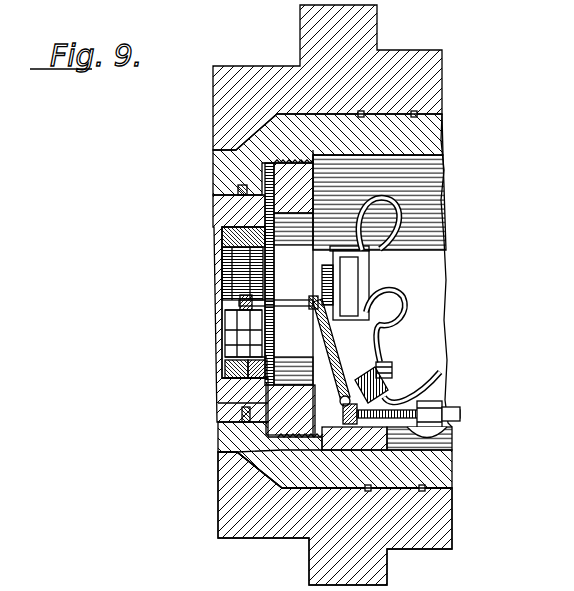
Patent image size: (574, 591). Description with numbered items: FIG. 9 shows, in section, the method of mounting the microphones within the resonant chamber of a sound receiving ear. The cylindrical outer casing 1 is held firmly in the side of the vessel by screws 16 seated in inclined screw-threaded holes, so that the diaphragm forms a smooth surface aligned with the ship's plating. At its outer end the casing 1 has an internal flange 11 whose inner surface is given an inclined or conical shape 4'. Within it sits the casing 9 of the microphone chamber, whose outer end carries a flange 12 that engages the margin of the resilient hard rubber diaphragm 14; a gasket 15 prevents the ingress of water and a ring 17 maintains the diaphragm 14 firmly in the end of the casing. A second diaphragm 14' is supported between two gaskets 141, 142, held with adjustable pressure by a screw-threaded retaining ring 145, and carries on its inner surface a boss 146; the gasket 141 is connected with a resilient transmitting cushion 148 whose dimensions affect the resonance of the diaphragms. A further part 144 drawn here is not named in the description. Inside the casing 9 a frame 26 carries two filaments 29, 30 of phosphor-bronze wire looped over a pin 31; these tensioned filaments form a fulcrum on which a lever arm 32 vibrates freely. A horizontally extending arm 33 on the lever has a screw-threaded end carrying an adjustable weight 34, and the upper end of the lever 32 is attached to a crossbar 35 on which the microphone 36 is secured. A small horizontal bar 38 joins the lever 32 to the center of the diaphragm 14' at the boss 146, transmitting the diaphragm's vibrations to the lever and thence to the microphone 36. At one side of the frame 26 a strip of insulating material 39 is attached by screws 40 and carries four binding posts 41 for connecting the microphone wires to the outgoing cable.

The outer casing 1 is at (220, 134).
The conical inner surface 4' is at (297, 118).
The microphone chamber casing 9 is at (417, 159).
The internal flange 11 is at (213, 152).
The flange 12 is at (228, 421).
The diaphragm 14 is at (224, 292).
The diaphragm 14' is at (217, 302).
The gasket 141 is at (230, 368).
The gasket 142 is at (230, 391).
The cylinder wall 144 is at (270, 352).
The retaining ring 145 is at (247, 358).
The boss 146 is at (245, 313).
The cushion 148 is at (240, 299).
The gasket 15 is at (231, 443).
The screws 16 is at (233, 462).
The ring 17 is at (242, 411).
The frame 26 is at (337, 420).
The filament 29 is at (318, 392).
The filament 30 is at (332, 352).
The pin 31 is at (400, 404).
The lever arm 32 is at (312, 345).
The horizontally extending arm 33 is at (433, 433).
The adjustable weight 34 is at (442, 406).
The crossbar 35 is at (318, 288).
The microphone 36 is at (345, 287).
The horizontal bar 38 is at (309, 300).
The strip of insulating material 39 is at (392, 397).
The screws 40 is at (371, 368).
The binding posts 41 is at (392, 374).